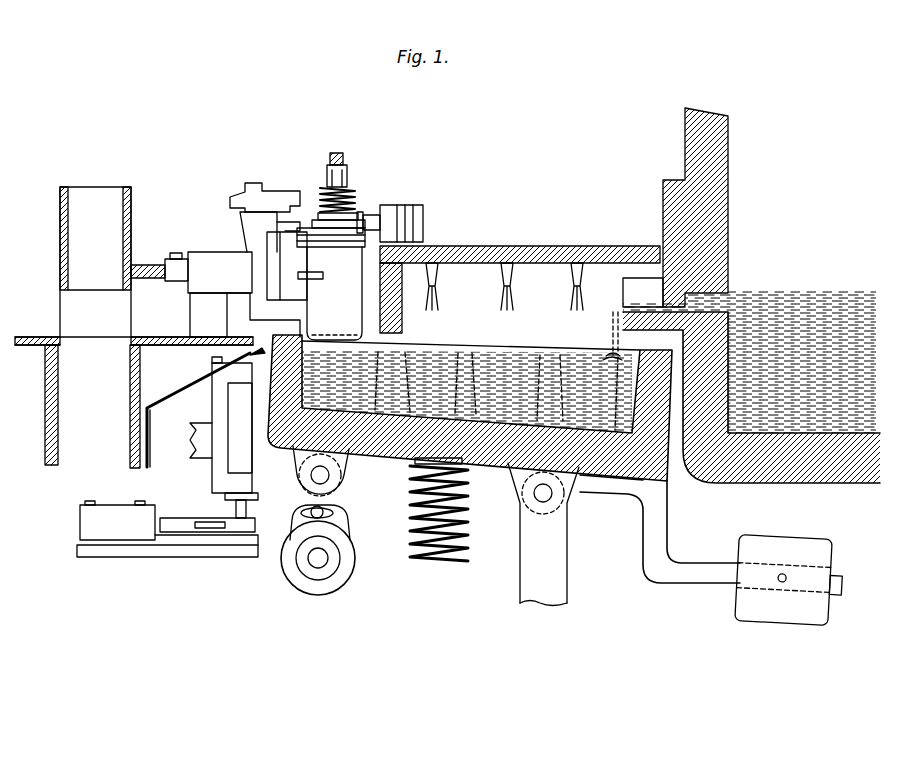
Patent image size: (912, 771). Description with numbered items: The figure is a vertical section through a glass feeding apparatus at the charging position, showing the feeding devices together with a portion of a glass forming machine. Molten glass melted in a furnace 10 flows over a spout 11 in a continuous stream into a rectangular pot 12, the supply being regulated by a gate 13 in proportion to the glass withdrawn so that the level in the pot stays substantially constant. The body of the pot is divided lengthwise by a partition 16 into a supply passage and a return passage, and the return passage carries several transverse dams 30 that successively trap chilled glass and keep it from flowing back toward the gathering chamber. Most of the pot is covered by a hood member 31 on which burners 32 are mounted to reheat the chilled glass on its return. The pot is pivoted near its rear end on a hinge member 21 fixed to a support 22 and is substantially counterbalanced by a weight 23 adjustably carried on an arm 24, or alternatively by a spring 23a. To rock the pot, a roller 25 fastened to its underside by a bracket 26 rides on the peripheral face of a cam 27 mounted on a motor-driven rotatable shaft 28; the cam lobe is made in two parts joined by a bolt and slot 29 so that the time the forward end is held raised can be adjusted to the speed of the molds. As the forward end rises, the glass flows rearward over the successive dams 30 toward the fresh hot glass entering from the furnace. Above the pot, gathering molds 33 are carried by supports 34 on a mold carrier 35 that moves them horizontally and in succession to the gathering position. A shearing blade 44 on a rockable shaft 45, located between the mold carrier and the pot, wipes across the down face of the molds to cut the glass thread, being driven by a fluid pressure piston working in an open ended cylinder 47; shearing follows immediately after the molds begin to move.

The melting tank 10 is at (850, 472).
The spout 11 is at (632, 292).
The pot 12 is at (507, 470).
The gate 13 is at (665, 205).
The partition 16 is at (522, 348).
The hinge member 21 is at (551, 497).
The support 22 is at (540, 580).
The counterbalance weight 23 is at (760, 545).
The spring 23a is at (440, 551).
The arm 24 is at (690, 562).
The roller 25 is at (341, 486).
The bracket 26 is at (296, 462).
The cam 27 is at (335, 514).
The rotatable shaft 28 is at (317, 562).
The bolt and slot 29 is at (308, 514).
The dams 30 is at (420, 348).
The hood member 31 is at (545, 247).
The burners 32 is at (438, 273).
The gathering molds 33 is at (345, 246).
The supports 34 is at (227, 233).
The mold carrier 35 is at (177, 318).
The shearing blade 44 is at (255, 351).
The rockable shaft 45 is at (240, 455).
The cylinder 47 is at (114, 515).